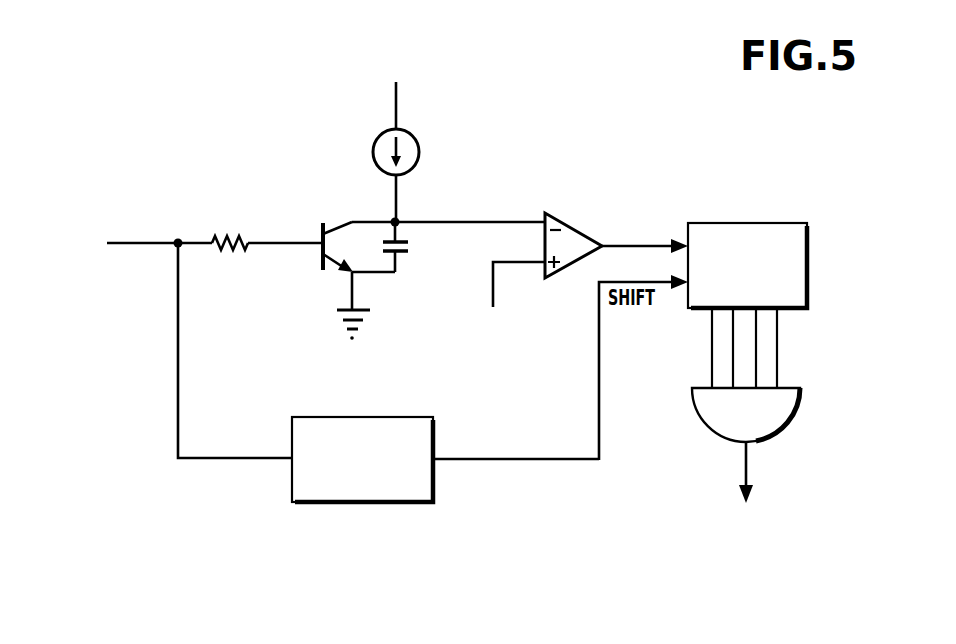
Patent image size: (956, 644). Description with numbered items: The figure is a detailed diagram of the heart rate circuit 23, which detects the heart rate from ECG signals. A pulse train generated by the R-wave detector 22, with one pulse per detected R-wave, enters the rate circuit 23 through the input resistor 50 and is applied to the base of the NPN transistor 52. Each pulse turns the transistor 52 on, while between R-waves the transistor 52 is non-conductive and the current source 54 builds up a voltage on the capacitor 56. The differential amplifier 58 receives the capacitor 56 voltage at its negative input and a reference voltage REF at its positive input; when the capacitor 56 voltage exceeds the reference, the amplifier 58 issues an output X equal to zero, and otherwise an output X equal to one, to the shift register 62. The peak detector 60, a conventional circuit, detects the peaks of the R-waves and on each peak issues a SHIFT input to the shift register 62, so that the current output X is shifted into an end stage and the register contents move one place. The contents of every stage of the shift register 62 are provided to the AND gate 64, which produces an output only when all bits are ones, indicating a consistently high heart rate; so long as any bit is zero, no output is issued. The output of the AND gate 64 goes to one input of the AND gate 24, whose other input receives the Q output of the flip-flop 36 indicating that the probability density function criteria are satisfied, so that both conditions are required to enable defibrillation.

The heart rate circuit 23 is at (578, 140).
The R-wave detector 22 is at (112, 280).
The input resistor 50 is at (237, 236).
The NPN transistor 52 is at (321, 254).
The flip-flop 36 is at (412, 75).
The current source 54 is at (419, 153).
The capacitor 56 is at (403, 254).
The differential amplifier 58 is at (578, 227).
The shift register 62 is at (786, 222).
The AND gate 64 is at (792, 417).
The AND gate 24 is at (757, 522).
The peak detector 60 is at (407, 415).